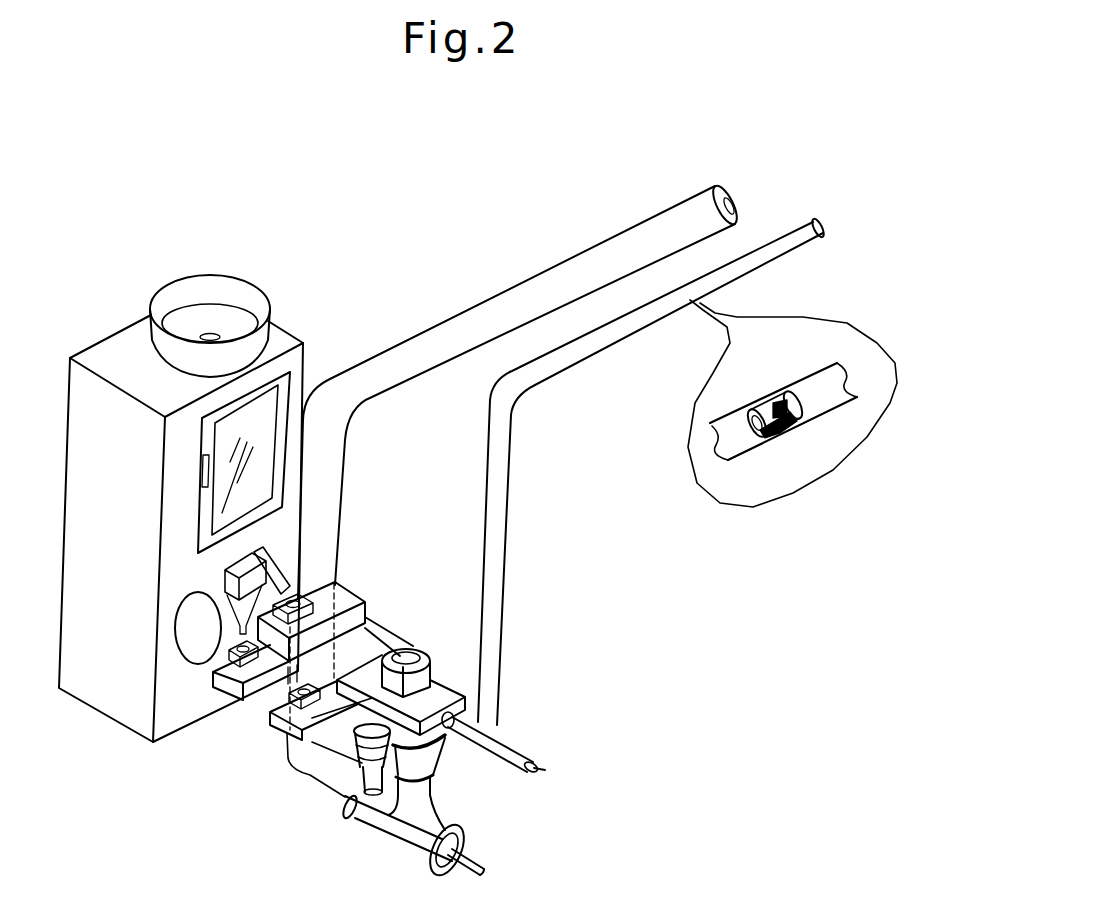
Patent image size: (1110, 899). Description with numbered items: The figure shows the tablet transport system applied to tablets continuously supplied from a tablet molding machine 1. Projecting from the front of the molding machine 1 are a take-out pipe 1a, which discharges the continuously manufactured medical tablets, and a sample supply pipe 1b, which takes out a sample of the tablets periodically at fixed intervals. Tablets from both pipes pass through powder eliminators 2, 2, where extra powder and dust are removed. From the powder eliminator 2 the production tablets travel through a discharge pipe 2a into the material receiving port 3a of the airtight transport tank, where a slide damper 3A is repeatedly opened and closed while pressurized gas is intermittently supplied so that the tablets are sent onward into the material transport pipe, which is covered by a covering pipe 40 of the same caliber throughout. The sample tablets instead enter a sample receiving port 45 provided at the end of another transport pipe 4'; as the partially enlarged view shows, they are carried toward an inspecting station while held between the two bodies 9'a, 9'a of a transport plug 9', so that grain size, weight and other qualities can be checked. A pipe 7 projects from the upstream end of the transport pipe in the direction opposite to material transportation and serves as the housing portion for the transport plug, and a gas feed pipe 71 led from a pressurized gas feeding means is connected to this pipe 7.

The tablet molding machine 1 is at (113, 340).
The take-out pipe 1a is at (290, 590).
The sample supply pipe 1b is at (216, 598).
The powder eliminator 2 is at (347, 595).
The discharge pipe 2a is at (390, 642).
The material receiving port 3a is at (414, 654).
The slide damper 3A is at (433, 690).
The transport pipe 4' is at (669, 495).
The covering pipe 40 is at (367, 360).
The sample receiving port 45 is at (345, 728).
The pipe 7 is at (411, 838).
The gas feed pipe 71 is at (476, 860).
The transport plug 9' is at (775, 437).
The body of transport plug 9'a is at (774, 390).